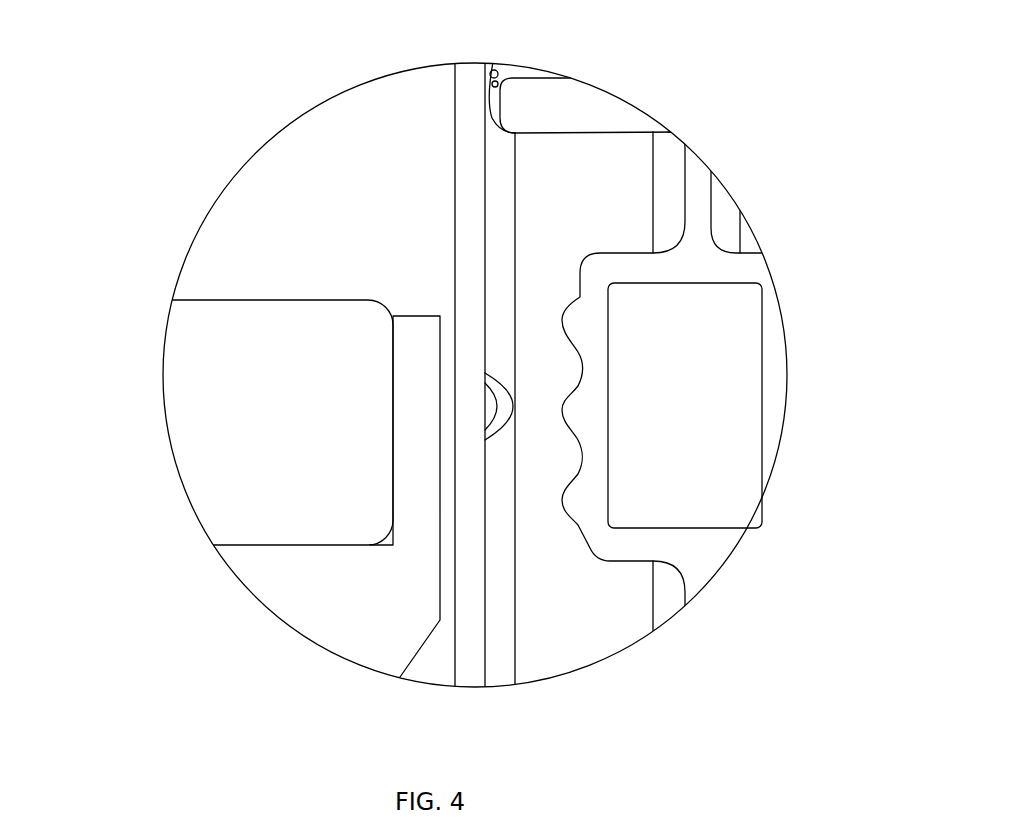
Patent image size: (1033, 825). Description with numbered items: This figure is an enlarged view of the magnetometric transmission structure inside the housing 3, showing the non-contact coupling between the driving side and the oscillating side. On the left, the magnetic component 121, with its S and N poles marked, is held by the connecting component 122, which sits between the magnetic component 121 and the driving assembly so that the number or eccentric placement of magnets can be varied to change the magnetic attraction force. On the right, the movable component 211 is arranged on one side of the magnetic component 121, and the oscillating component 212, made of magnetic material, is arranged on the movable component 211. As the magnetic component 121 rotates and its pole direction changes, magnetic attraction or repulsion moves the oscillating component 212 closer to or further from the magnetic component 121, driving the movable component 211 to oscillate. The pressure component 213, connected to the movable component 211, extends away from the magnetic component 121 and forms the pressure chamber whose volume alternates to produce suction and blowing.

The housing 3 is at (360, 208).
The magnetic component 121 is at (272, 378).
The connecting component 122 is at (343, 573).
The movable component 211 is at (695, 263).
The oscillating component 212 is at (695, 383).
The pressure component 213 is at (578, 113).